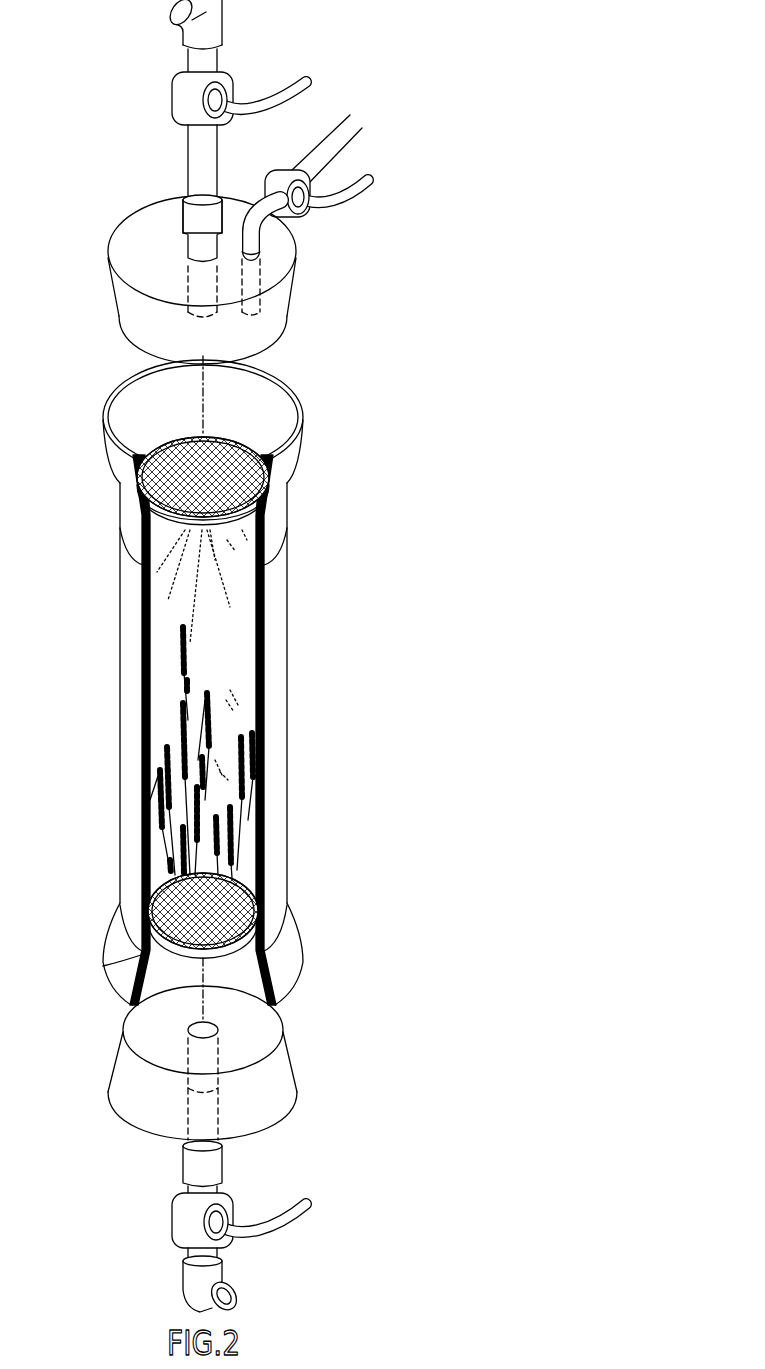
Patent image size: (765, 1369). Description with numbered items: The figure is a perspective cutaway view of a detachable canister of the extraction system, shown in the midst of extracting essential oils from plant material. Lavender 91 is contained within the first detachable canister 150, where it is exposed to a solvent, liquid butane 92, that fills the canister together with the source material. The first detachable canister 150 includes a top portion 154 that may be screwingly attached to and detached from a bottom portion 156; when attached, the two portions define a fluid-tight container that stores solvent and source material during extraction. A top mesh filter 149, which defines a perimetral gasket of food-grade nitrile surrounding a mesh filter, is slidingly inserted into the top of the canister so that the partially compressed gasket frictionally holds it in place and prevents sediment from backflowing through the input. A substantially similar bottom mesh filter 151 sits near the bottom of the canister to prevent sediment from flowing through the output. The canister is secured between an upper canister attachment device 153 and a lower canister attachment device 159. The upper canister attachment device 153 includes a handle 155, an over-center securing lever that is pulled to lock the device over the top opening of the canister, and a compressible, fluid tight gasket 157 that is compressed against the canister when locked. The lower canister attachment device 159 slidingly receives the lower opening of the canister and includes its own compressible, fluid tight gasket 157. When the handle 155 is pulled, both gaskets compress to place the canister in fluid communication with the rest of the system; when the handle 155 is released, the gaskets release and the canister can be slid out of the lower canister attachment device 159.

The lavender 91 is at (237, 840).
The liquid butane 92 is at (220, 765).
The top mesh filter 149 is at (270, 523).
The first detachable canister 150 is at (163, 462).
The bottom mesh filter 151 is at (103, 968).
The upper canister attachment device 153 is at (289, 455).
The top portion 154 is at (130, 524).
The handle 155 is at (312, 80).
The bottom portion 156 is at (132, 814).
The compressible, fluid tight gasket 157 is at (275, 312).
The lower canister attachment device 159 is at (292, 971).